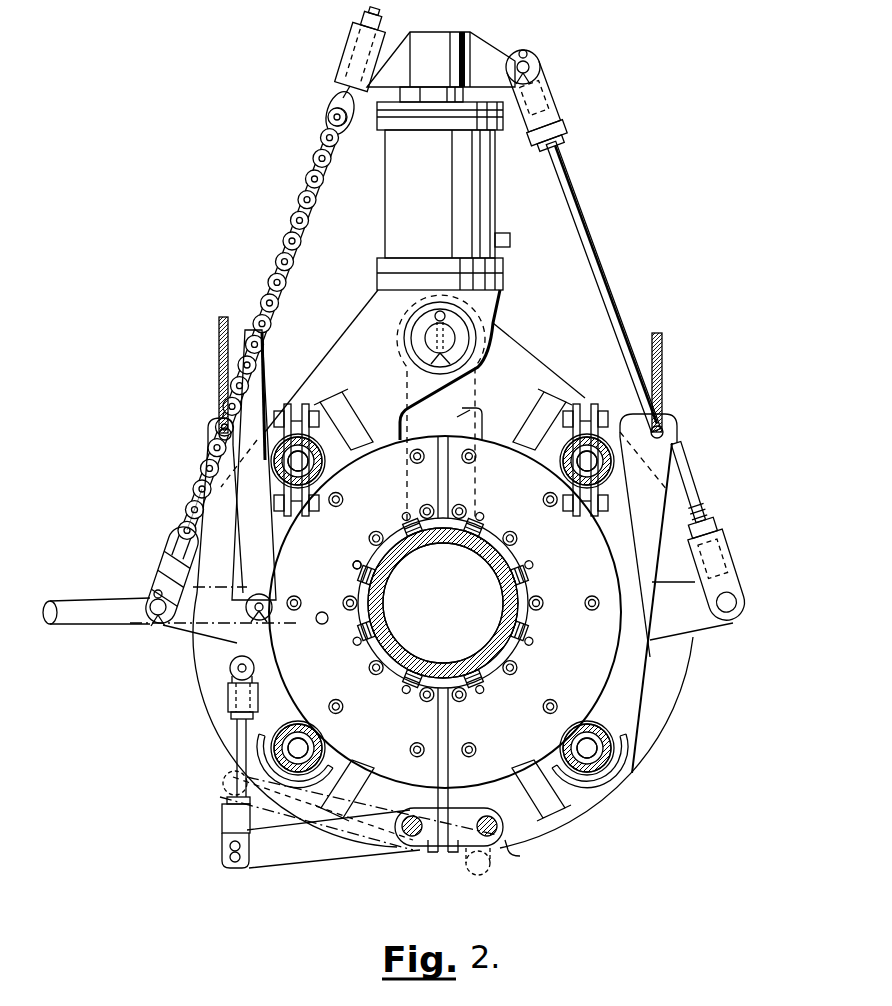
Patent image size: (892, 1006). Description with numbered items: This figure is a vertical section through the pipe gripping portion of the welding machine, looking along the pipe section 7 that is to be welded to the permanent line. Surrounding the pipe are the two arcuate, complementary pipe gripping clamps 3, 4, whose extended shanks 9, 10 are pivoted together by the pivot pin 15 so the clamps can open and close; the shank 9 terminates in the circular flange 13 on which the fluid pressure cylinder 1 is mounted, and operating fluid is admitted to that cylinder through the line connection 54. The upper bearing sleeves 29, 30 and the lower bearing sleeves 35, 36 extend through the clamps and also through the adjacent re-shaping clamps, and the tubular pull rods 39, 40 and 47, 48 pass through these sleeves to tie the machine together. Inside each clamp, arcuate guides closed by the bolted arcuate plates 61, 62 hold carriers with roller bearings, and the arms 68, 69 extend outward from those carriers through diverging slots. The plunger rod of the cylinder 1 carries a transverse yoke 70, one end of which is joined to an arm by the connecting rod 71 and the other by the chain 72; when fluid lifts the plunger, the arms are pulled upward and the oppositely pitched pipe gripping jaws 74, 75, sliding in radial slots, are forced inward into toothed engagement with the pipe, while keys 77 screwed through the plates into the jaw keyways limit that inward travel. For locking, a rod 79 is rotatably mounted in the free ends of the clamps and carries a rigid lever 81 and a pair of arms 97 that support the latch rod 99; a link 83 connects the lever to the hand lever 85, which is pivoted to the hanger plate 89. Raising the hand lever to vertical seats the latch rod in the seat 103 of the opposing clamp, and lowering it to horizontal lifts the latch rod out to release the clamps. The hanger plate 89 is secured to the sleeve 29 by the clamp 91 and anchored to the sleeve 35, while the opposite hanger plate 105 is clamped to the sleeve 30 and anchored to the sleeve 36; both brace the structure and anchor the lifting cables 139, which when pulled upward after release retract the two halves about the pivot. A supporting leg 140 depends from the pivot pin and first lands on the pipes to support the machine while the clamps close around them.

The fluid pressure cylinder 1 is at (498, 178).
The pipe gripping clamp 3 is at (204, 663).
The pipe gripping clamp 4 is at (681, 666).
The pipe section 7 is at (436, 560).
The extended shank 9 is at (340, 343).
The extended shank 10 is at (527, 357).
The circular flange 13 is at (508, 292).
The pivot pin 15 is at (448, 338).
The upper bearing sleeve 29 is at (302, 456).
The upper bearing sleeve 30 is at (600, 428).
The lower bearing sleeve 35 is at (299, 754).
The lower bearing sleeve 36 is at (581, 754).
The tubular pull rod 39 is at (310, 462).
The tubular pull rod 40 is at (570, 457).
The tubular pull rod 47 is at (318, 748).
The tubular pull rod 48 is at (606, 765).
The line connection 54 is at (509, 236).
The arcuate plate 61 is at (380, 452).
The arcuate plate 62 is at (496, 456).
The arm 68 is at (716, 624).
The arm 69 is at (181, 633).
The transverse yoke 70 is at (500, 53).
The connecting rod 71 is at (612, 294).
The chain 72 is at (278, 259).
The pipe gripping jaw 74 is at (494, 543).
The pipe gripping jaw 75 is at (402, 540).
The key 77 is at (352, 566).
The rod 79 is at (410, 840).
The lever 81 is at (272, 862).
The link 83 is at (236, 760).
The hand lever 85 is at (247, 490).
The hanger plate 89 is at (241, 568).
The clamp 91 is at (298, 406).
The arm 97 is at (431, 810).
The latch rod 99 is at (481, 812).
The seat 103 is at (510, 850).
The hanger plate 105 is at (690, 511).
The lifting cable 139 is at (219, 360).
The supporting leg 140 is at (457, 417).